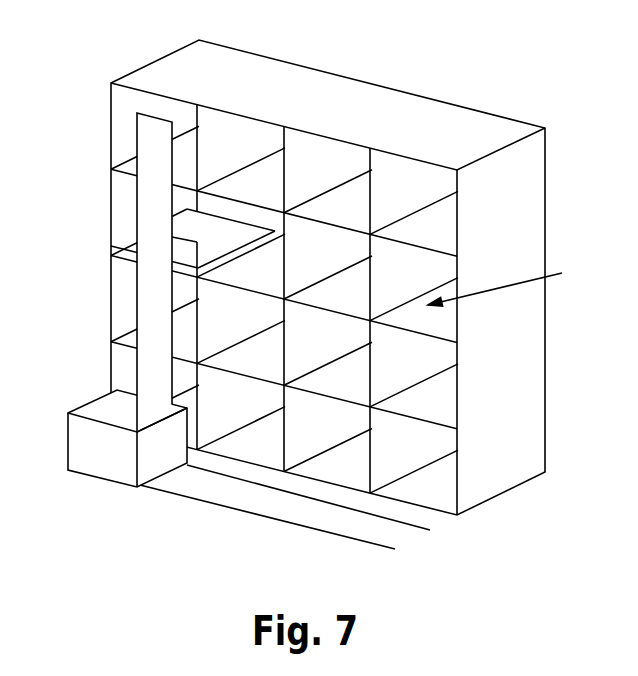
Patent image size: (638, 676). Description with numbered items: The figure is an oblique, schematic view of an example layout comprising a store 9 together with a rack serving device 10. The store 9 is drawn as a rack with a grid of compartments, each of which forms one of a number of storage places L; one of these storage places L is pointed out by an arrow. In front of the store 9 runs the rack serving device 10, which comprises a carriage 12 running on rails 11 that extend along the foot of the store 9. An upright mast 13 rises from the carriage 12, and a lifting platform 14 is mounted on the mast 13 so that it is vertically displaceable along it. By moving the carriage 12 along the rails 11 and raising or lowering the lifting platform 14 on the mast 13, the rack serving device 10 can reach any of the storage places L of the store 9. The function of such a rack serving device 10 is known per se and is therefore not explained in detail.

The store 9 is at (458, 118).
The rack serving device 10 is at (93, 301).
The rails 11 is at (223, 503).
The carriage 12 is at (87, 443).
The mast 13 is at (150, 300).
The lifting platform 14 is at (198, 232).
The storage places L is at (507, 283).